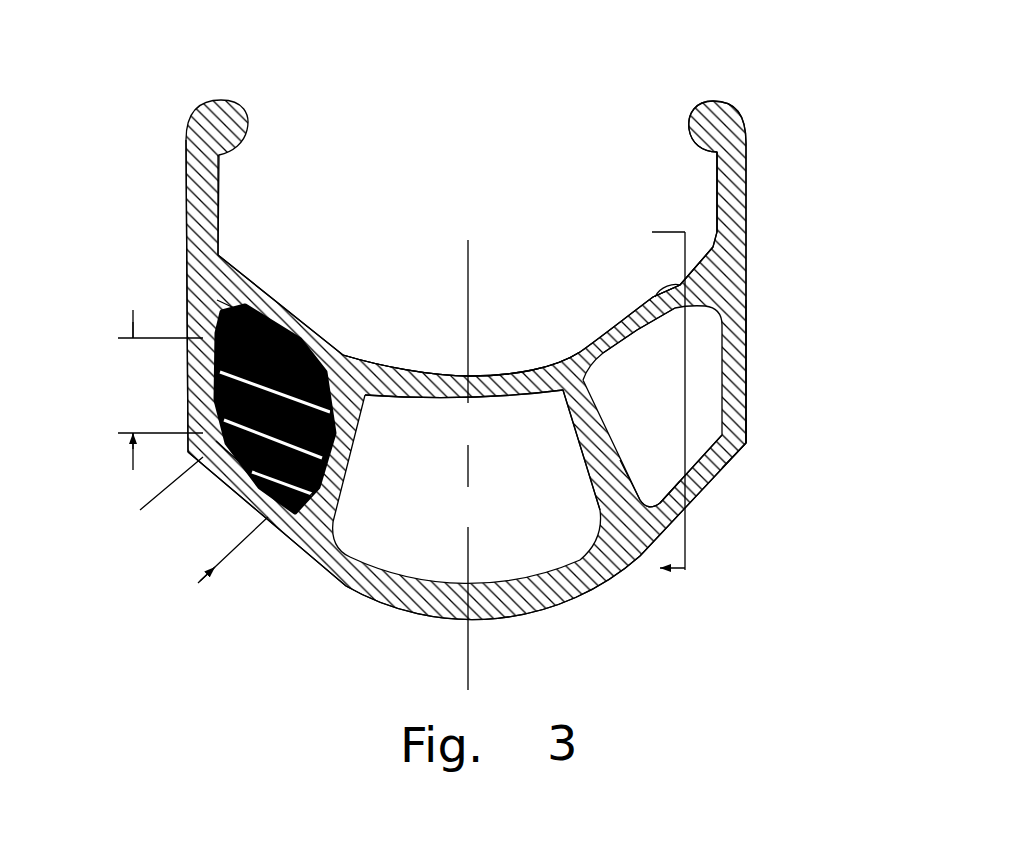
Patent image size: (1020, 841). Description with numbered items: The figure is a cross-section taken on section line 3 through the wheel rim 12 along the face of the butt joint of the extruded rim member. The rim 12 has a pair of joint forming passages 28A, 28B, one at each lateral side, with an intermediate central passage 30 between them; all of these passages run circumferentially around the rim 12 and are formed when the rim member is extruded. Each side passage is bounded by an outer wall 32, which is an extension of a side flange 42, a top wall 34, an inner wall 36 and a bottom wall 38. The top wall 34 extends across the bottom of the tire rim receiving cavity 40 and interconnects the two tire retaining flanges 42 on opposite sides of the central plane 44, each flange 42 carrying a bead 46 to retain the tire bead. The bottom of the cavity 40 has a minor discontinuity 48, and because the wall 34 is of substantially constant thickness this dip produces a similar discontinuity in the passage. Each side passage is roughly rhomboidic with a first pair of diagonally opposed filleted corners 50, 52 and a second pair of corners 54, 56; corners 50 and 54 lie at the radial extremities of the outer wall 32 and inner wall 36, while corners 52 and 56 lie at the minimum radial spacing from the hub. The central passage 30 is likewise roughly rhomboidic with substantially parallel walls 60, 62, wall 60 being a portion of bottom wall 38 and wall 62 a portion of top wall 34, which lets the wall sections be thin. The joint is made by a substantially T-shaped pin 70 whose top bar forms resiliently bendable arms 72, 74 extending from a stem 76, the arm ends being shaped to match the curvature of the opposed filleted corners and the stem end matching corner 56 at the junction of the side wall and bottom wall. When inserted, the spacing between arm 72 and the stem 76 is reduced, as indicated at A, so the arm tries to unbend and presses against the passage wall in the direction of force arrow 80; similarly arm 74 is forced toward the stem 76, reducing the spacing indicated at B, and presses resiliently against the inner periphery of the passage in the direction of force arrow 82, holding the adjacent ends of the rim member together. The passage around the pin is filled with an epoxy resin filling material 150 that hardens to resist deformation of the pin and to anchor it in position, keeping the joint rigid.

The rim 12 is at (757, 443).
The side flange 42 is at (184, 192).
The bead 46 is at (707, 117).
The filleted corner 50 is at (748, 262).
The outer wall 32 is at (748, 363).
The corner 56 is at (750, 430).
The joint forming passage 28B is at (720, 465).
The bottom wall 38 is at (686, 470).
The bottom wall of central passage 60 is at (450, 620).
The joint forming passage 28A is at (218, 485).
The resiliently bendable arm 72 is at (342, 583).
The central plane 44 is at (468, 290).
The top wall 34 is at (496, 374).
The discontinuity 48 is at (605, 338).
The tire rim receiving cavity 40 is at (504, 257).
The wall of central passage 62 is at (437, 566).
The central passage 30 is at (483, 475).
The inner wall 36 is at (352, 460).
The corner 54 is at (584, 381).
The filleted corner 52 is at (648, 505).
The section line 3 is at (653, 399).
The filling material 150 is at (190, 345).
The resiliently bendable arm 74 is at (225, 318).
The stem 76 is at (288, 318).
The force arrow 82 is at (297, 267).
The T-shaped pin 70 is at (330, 350).
The force arrow 80 is at (357, 515).
The reduced distance B is at (160, 385).
The reduced distance A is at (215, 538).